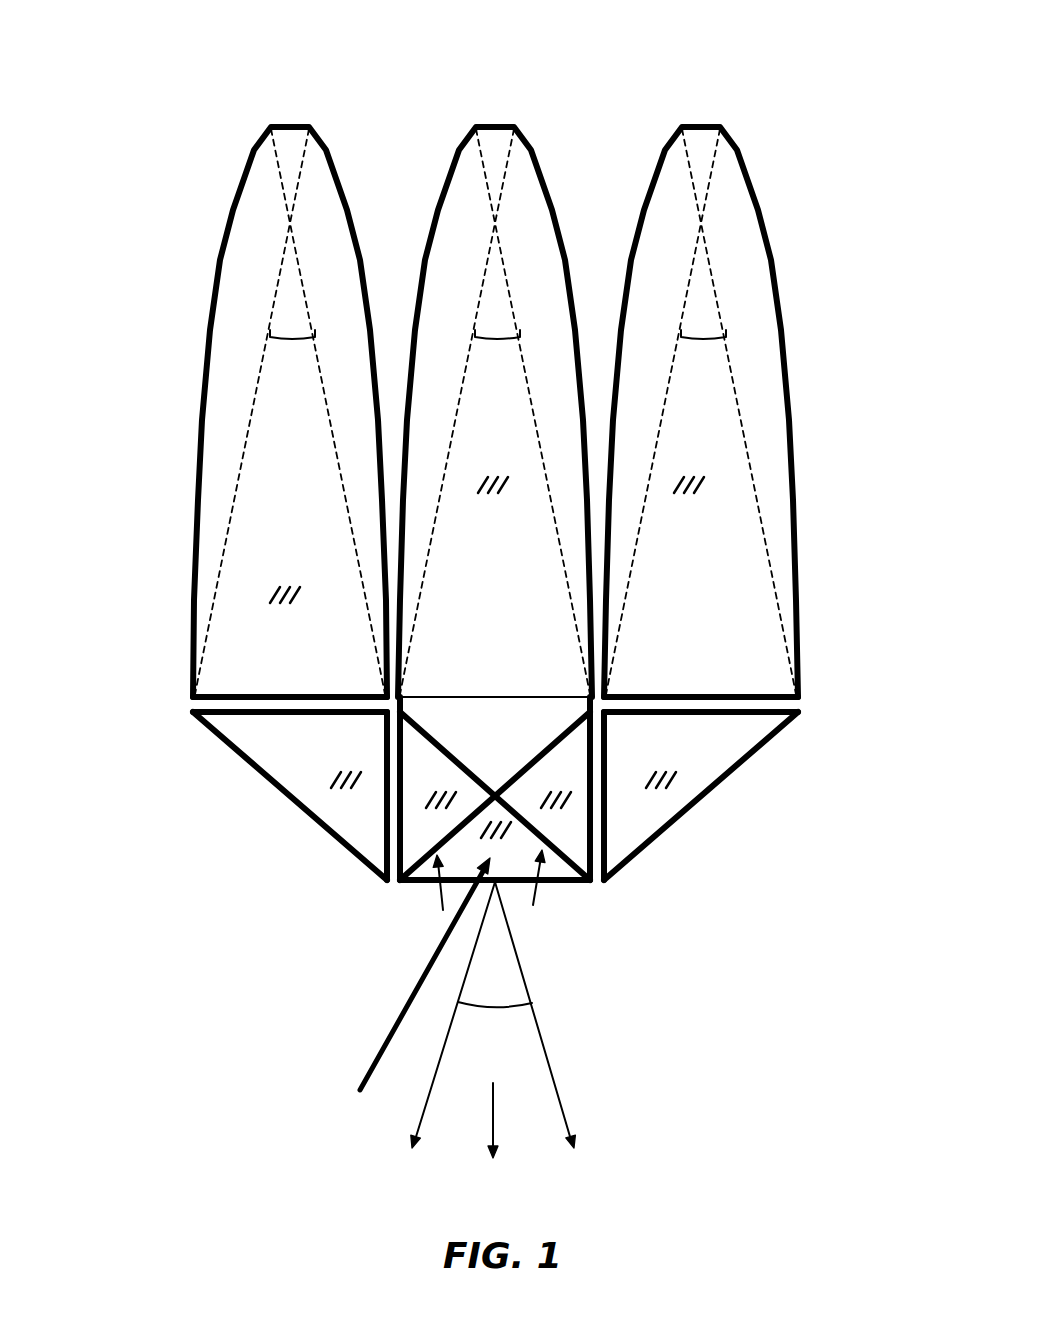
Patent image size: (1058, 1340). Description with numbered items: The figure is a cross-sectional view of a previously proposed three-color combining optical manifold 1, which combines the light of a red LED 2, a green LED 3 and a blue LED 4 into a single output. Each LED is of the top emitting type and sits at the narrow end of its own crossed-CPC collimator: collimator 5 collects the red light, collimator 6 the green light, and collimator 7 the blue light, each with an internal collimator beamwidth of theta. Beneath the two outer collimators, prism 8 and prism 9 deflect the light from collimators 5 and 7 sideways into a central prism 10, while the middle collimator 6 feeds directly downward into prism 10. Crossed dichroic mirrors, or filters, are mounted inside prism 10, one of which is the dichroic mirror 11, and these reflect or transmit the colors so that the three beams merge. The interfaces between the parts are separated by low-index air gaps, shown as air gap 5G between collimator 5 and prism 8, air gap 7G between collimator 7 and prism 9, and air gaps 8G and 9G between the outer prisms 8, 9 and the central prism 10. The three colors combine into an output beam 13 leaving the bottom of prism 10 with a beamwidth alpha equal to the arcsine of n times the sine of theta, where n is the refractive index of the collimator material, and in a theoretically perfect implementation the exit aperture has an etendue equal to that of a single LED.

The optical manifold 1 is at (130, 1032).
The red LED 2 is at (302, 108).
The green LED 3 is at (507, 108).
The blue LED 4 is at (713, 108).
The crossed-CPC collimator 5 is at (235, 192).
The crossed-CPC collimator 6 is at (457, 152).
The crossed-CPC collimator 7 is at (780, 200).
The air gap 5G is at (192, 698).
The air gap 7G is at (800, 698).
The prism 8 is at (240, 796).
The prism 9 is at (755, 796).
The air gap 8G is at (388, 884).
The air gap 9G is at (598, 884).
The prism 10 is at (562, 886).
The dichroic mirror 11 is at (533, 905).
The output beam 13 is at (560, 1048).